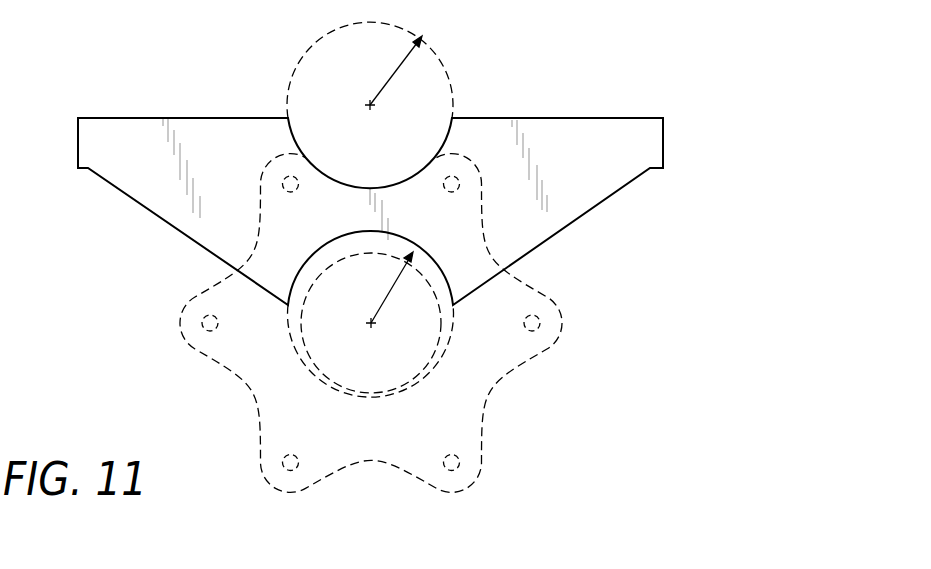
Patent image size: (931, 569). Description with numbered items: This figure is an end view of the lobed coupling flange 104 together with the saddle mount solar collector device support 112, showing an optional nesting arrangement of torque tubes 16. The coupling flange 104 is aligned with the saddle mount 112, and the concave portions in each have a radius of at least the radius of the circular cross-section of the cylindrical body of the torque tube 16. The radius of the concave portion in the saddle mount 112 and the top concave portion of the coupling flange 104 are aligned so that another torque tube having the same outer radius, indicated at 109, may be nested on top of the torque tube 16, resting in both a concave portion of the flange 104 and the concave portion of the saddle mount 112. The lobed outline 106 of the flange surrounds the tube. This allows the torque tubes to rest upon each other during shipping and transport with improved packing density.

The torque tube 16 is at (433, 367).
The coupling flange 104 is at (573, 447).
The hub 106 is at (502, 340).
The upper cylindrical surface of radius r2 109 is at (373, 187).
The saddle mount solar collector device support 112 is at (588, 127).